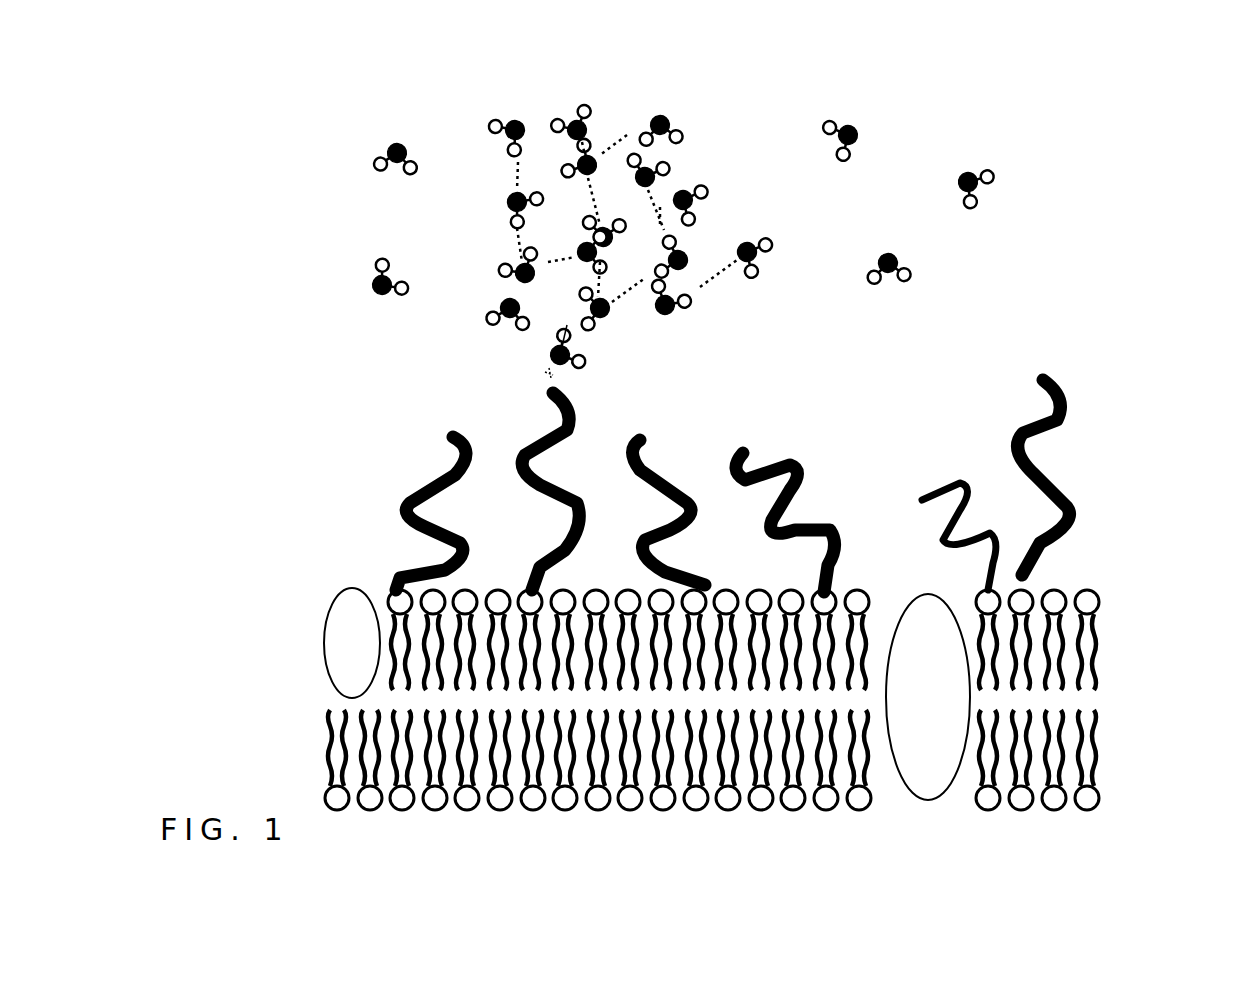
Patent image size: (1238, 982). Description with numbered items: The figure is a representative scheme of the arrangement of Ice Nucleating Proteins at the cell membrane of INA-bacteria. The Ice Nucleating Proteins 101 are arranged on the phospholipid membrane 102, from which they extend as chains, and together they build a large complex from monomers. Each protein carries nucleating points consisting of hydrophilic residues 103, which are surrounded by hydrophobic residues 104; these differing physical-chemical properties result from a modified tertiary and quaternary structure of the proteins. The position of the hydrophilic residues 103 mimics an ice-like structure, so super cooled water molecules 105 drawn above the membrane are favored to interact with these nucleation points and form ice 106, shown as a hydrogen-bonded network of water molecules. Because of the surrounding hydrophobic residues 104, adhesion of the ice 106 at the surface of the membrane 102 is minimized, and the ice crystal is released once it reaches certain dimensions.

The Ice Nucleating Proteins 101 is at (800, 490).
The phospholipid membrane 102 is at (287, 662).
The hydrophilic residues 103 is at (547, 396).
The hydrophobic residues 104 is at (757, 447).
The super cooled water molecules 105 is at (388, 148).
The ice 106 is at (683, 104).